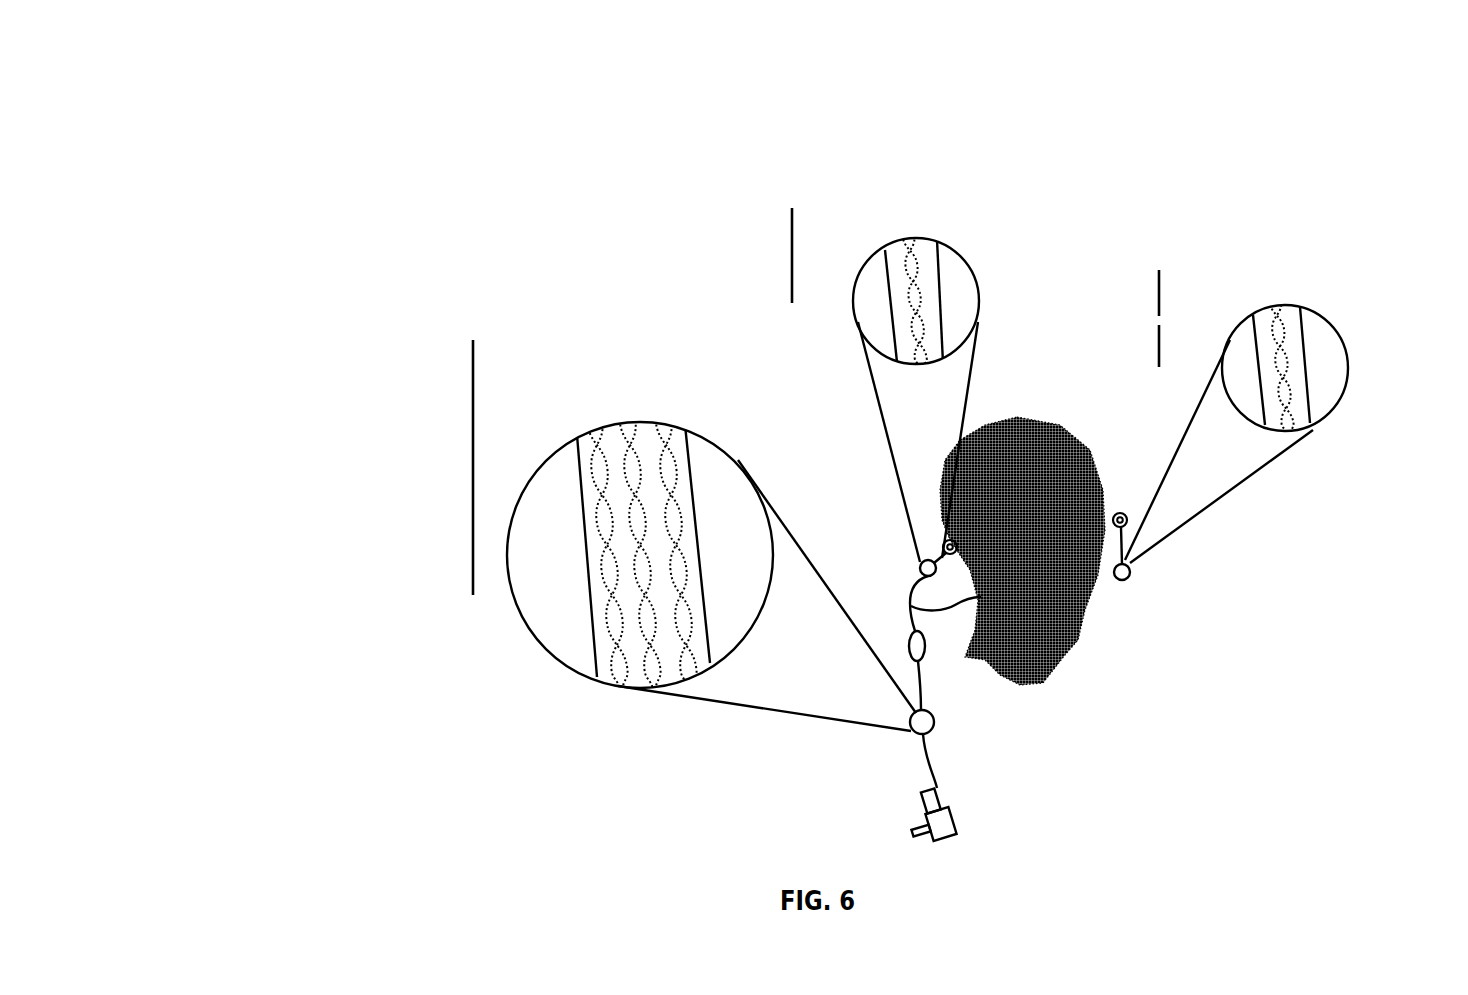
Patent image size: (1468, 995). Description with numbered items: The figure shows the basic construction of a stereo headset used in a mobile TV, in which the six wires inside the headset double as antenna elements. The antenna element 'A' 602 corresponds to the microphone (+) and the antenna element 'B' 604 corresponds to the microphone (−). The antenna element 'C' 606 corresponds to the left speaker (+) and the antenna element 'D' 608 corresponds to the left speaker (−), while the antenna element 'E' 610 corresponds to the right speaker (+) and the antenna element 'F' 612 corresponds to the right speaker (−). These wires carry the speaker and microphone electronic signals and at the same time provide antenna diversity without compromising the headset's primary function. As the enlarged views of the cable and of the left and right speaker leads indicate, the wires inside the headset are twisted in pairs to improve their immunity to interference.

The antenna element 'A' 602 is at (742, 352).
The antenna element 'B' 604 is at (742, 386).
The antenna element 'C' 606 is at (1305, 275).
The antenna element 'D' 608 is at (1350, 452).
The antenna element 'E' 610 is at (1022, 162).
The antenna element 'F' 612 is at (1022, 190).